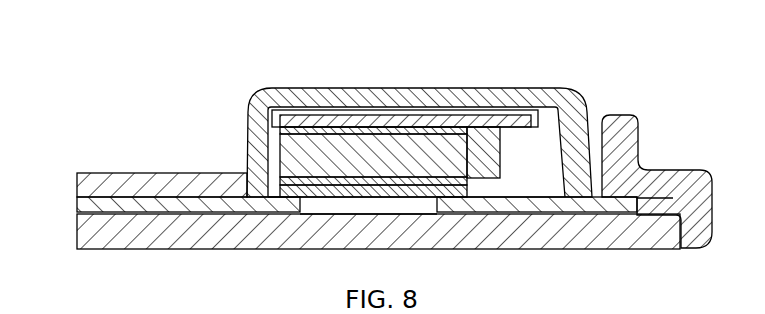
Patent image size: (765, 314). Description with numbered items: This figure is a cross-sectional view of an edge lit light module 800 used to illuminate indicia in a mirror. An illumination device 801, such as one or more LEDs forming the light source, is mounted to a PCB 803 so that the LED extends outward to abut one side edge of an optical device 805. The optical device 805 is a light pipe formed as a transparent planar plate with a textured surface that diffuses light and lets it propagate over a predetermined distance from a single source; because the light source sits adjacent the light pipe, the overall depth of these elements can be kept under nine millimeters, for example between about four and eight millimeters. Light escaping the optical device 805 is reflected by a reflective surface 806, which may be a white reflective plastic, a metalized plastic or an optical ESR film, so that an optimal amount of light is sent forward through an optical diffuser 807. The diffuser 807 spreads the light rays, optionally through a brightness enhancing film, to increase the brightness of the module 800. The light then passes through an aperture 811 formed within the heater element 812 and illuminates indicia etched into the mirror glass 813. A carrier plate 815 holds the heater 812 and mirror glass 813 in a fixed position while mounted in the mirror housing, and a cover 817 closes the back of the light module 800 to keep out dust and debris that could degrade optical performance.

The edge lit light module 800 is at (125, 75).
The illumination device 801 is at (487, 135).
The PCB 803 is at (514, 103).
The optical device 805 is at (356, 150).
The reflective surface 806 is at (268, 127).
The optical diffuser 807 is at (248, 180).
The aperture 811 is at (317, 203).
The heater element 812 is at (78, 203).
The mirror glass 813 is at (77, 232).
The carrier plate 815 is at (686, 170).
The cover 817 is at (580, 98).